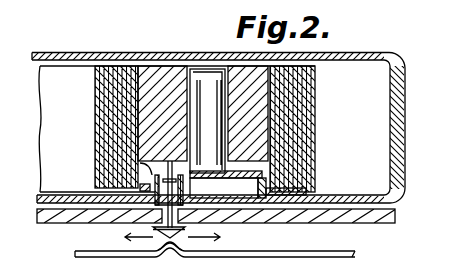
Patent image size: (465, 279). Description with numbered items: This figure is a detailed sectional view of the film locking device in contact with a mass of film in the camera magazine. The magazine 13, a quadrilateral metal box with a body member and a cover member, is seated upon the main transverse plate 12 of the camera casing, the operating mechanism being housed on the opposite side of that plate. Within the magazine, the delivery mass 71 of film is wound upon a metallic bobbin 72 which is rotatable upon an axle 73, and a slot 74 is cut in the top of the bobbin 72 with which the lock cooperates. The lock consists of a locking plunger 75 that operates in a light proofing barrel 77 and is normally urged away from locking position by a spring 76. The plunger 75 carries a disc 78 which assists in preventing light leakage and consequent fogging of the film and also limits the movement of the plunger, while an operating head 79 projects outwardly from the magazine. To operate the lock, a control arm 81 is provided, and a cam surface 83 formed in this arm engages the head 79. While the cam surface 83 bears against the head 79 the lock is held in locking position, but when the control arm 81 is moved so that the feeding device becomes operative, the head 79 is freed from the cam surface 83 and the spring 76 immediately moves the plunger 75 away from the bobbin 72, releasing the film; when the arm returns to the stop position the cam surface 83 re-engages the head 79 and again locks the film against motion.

The main transverse plate 12 is at (372, 218).
The magazine 13 is at (351, 53).
The delivery mass 71 is at (311, 123).
The metallic bobbin 72 is at (168, 68).
The axle 73 is at (206, 83).
The slot 74 is at (268, 165).
The locking plunger 75 is at (152, 165).
The spring 76 is at (143, 227).
The light proofing barrel 77 is at (152, 187).
The disc 78 is at (160, 180).
The operating head 79 is at (226, 237).
The control arm 81 is at (287, 252).
The cam surface 83 is at (170, 248).